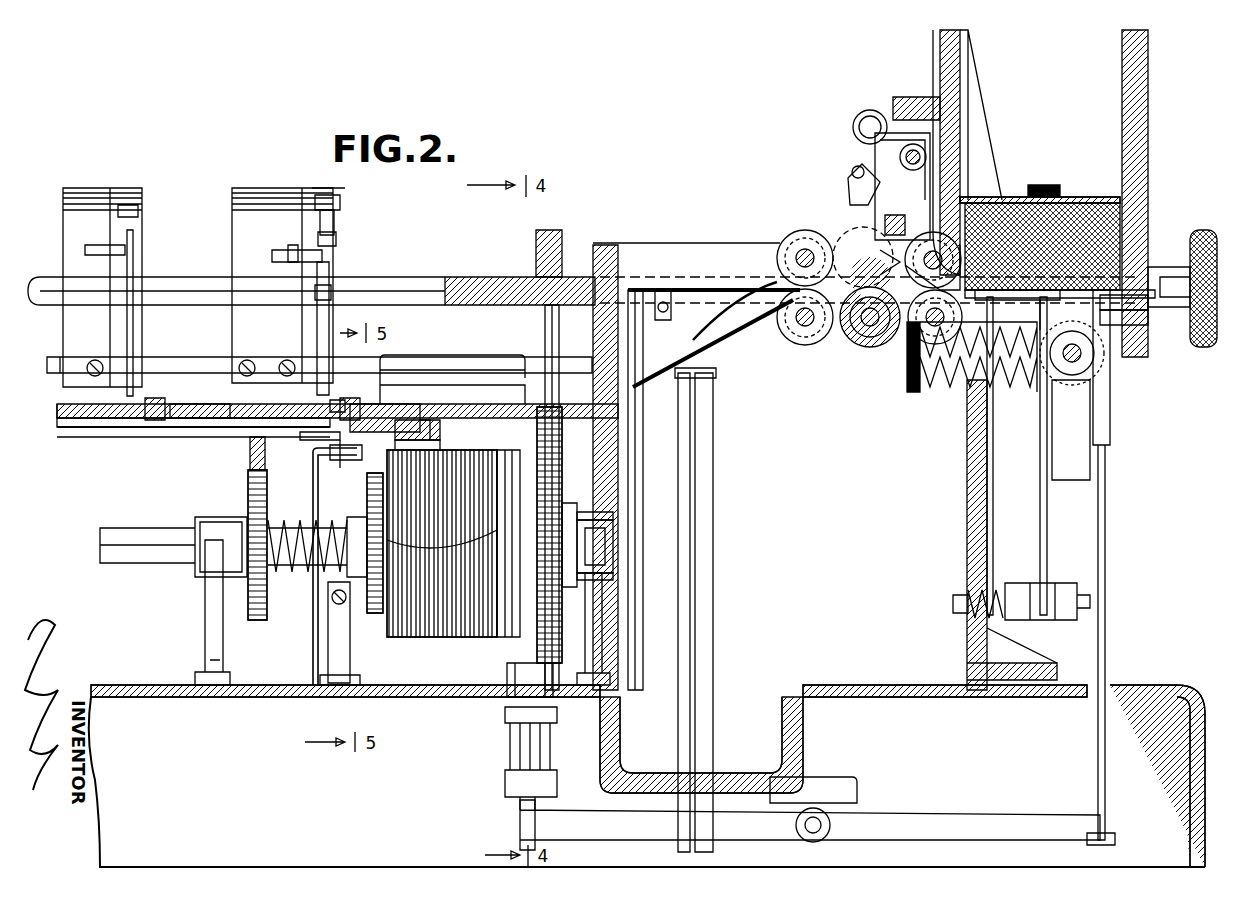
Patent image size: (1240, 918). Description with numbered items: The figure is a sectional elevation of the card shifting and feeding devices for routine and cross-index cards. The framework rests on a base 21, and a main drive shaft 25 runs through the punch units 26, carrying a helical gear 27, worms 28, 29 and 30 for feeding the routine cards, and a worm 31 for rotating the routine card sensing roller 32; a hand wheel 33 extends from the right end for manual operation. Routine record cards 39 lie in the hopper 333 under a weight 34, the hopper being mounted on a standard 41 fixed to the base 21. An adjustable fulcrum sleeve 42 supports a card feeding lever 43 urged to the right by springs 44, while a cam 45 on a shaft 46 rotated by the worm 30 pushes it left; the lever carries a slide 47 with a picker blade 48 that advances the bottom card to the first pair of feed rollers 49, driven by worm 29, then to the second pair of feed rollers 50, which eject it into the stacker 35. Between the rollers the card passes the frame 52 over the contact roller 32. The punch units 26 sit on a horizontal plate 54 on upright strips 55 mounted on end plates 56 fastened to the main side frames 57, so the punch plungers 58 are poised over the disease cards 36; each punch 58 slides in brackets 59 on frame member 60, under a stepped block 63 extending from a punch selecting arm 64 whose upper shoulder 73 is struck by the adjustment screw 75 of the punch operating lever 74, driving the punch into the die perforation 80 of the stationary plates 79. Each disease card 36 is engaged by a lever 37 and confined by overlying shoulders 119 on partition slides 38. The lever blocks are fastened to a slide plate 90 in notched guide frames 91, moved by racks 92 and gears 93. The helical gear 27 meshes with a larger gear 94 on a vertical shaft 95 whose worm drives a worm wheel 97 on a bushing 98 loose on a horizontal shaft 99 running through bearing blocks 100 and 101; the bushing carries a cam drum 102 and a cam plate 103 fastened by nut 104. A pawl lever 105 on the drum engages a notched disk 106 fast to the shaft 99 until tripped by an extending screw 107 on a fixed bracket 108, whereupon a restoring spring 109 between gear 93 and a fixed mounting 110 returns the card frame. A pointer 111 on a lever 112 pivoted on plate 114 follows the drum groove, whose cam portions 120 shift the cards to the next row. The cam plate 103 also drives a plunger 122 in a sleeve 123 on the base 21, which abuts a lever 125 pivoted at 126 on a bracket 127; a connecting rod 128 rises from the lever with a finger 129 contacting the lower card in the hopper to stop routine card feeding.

The base 21 is at (893, 690).
The main drive shaft 25 is at (402, 280).
The punch units 26 is at (173, 277).
The helical gear 27 is at (562, 244).
The worm 28 is at (772, 262).
The worm 29 is at (892, 345).
The worm 30 is at (1137, 228).
The worm 31 is at (838, 236).
The routine card sensing roller 32 is at (865, 345).
The hand wheel 33 is at (1205, 348).
The weight 34 is at (1068, 200).
The stacker 35 is at (730, 345).
The disease card 36 is at (262, 404).
The lever 37 is at (352, 400).
The partition slides 38 is at (395, 404).
The routine record cards 39 is at (1122, 215).
The standard 41 is at (967, 550).
The adjustable fulcrum sleeve 42 is at (1040, 620).
The card feeding lever 43 is at (1042, 520).
The springs 44 is at (972, 393).
The cam 45 is at (1060, 382).
The shaft 46 is at (1100, 362).
The slide 47 is at (985, 287).
The picker blade 48 is at (1122, 312).
The first pair of feed rollers 49 is at (955, 208).
The second pair of feed rollers 50 is at (805, 345).
The frame 52 is at (852, 188).
The horizontal plate 54 is at (470, 360).
The upright strips 55 is at (512, 385).
The end plates 56 is at (500, 418).
The main side frames 57 is at (600, 330).
The punch plunger 58 is at (333, 272).
The brackets 59 is at (338, 276).
The frame member 60 is at (282, 285).
The stepped block 63 is at (293, 250).
The punch selecting arm 64 is at (278, 256).
The upper shoulder 73 is at (330, 242).
The punch operating lever 74 is at (322, 192).
The adjustment screw 75 is at (336, 222).
The stationary plates 79 is at (78, 425).
The die perforation 80 is at (312, 432).
The slide plate 90 is at (95, 432).
The notched guide frames 91 is at (388, 402).
The racks 92 is at (250, 456).
The gears 93 is at (248, 490).
The larger gear 94 is at (493, 282).
The vertical shaft 95 is at (546, 326).
The worm wheel 97 is at (560, 655).
The bushing 98 is at (618, 516).
The horizontal shaft 99 is at (618, 545).
The bearing block 100 is at (594, 645).
The bearing block 101 is at (206, 615).
The cam drum 102 is at (442, 637).
The cam plate 103 is at (502, 637).
The nut 104 is at (578, 586).
The pawl lever 105 is at (372, 478).
The notched disk 106 is at (356, 625).
The extending screw 107 is at (330, 462).
The fixed bracket 108 is at (312, 618).
The restoring spring 109 is at (292, 576).
The fixed mounting 110 is at (352, 672).
The pointer 111 is at (430, 444).
The lever 112 is at (428, 430).
The plate 114 is at (424, 420).
The overlying shoulders 119 is at (238, 412).
The cam portions 120 is at (575, 520).
The plunger 122 is at (525, 665).
The sleeve 123 is at (515, 758).
The lever 125 is at (766, 830).
The pivot 126 is at (818, 836).
The bracket 127 is at (860, 788).
The connecting rod 128 is at (1105, 525).
The finger 129 is at (1120, 338).
The hopper 333 is at (1128, 124).